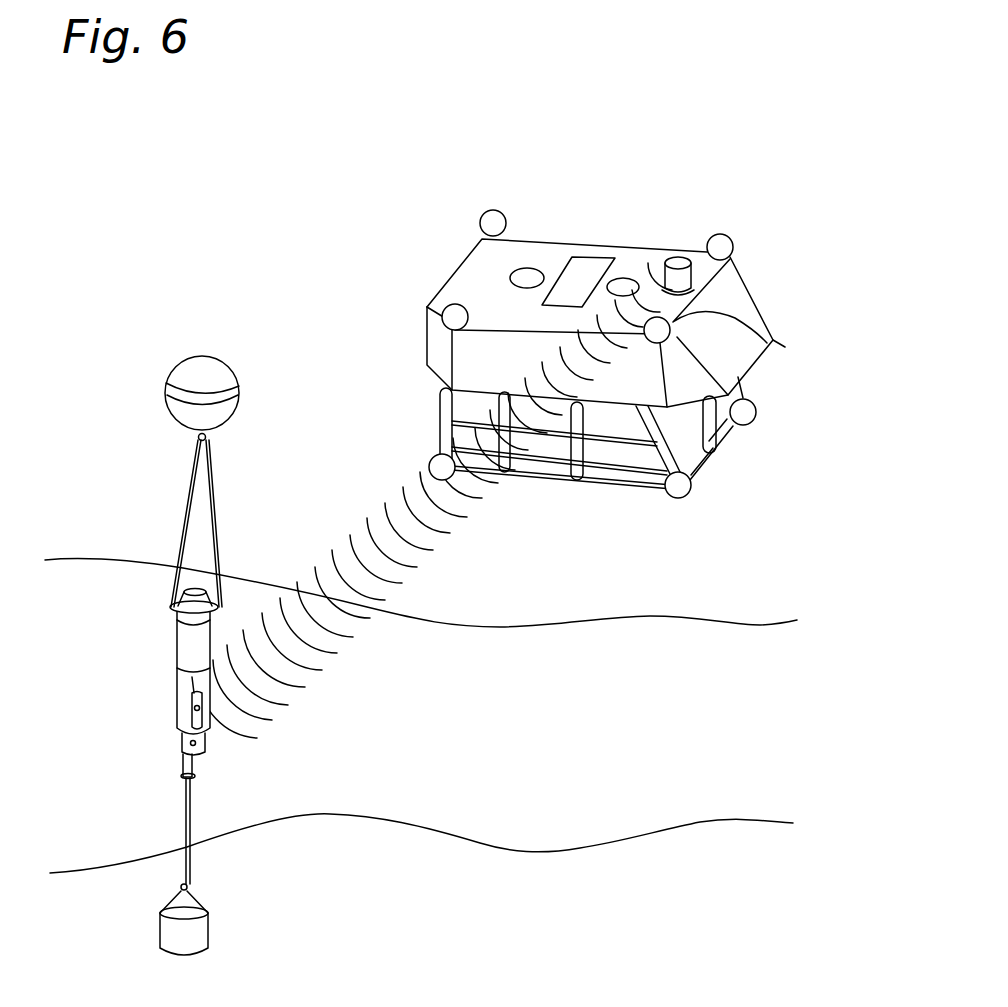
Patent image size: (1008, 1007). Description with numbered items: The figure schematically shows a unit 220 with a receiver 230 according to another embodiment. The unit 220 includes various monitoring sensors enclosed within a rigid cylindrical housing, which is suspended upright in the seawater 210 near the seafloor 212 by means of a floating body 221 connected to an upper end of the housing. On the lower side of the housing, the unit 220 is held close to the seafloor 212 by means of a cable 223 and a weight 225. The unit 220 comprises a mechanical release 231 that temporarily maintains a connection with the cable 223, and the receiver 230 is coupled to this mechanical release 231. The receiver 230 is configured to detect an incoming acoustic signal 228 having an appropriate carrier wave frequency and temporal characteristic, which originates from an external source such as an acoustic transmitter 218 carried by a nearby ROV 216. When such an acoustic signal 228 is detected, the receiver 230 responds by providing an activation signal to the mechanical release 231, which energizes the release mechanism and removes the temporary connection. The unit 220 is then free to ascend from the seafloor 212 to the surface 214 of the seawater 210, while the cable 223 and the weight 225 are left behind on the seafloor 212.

The seawater 210 is at (63, 231).
The seafloor 212 is at (62, 605).
The water surface 214 is at (89, 558).
The ROV 216 is at (586, 190).
The acoustic transmitter 218 is at (677, 258).
The unit 220 is at (165, 637).
The floating body 221 is at (230, 366).
The cable 223 is at (192, 800).
The weight 225 is at (210, 933).
The acoustic signal 228 is at (430, 566).
The receiver 230 is at (177, 712).
The mechanical release 231 is at (183, 748).